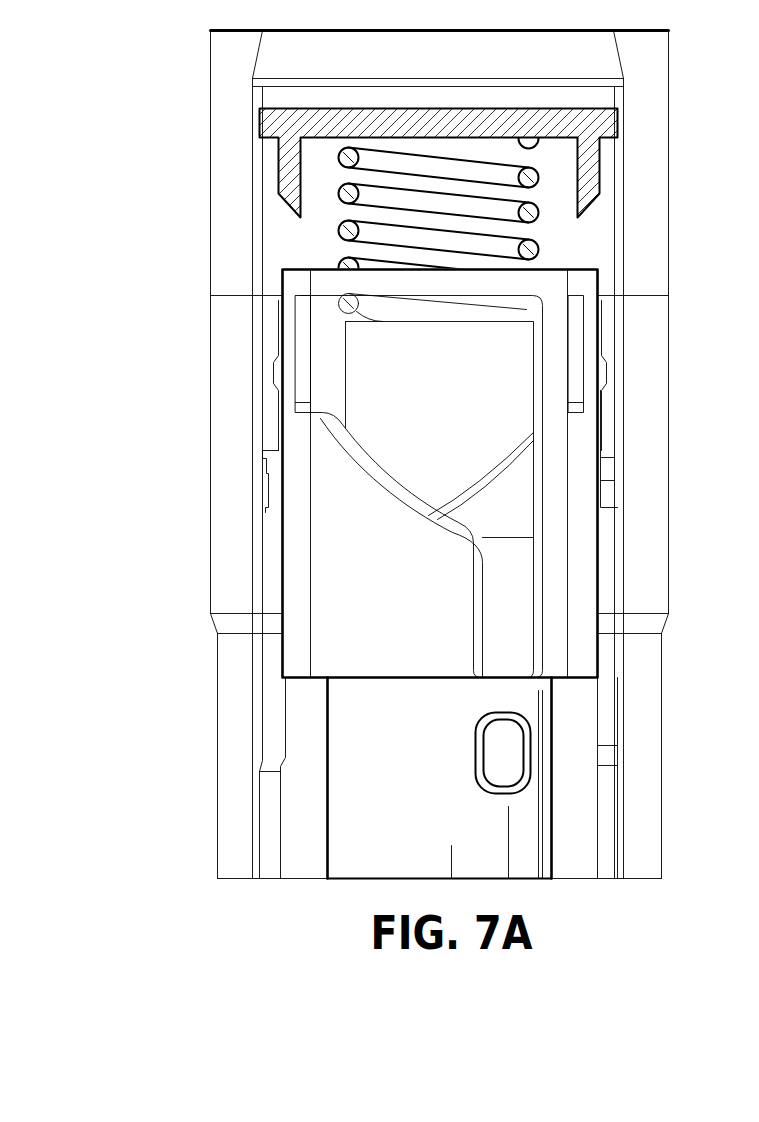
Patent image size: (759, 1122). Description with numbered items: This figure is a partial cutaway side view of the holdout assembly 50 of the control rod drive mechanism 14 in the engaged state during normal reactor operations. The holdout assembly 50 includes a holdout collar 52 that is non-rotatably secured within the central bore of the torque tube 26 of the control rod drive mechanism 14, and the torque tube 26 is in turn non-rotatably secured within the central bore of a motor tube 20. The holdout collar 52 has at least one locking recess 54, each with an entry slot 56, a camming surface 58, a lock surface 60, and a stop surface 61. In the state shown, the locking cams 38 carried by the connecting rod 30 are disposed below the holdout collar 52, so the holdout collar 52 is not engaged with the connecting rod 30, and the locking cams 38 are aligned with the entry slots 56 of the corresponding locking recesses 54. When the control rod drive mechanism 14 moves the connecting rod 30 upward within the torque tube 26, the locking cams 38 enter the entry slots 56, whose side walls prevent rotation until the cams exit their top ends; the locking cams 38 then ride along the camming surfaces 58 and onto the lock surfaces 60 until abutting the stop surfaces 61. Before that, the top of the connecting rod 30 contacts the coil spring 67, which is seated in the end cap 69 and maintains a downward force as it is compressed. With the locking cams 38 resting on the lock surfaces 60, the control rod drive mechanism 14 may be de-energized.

The control rod drive mechanism 14 is at (186, 137).
The motor tube 20 is at (638, 830).
The torque tube 26 is at (267, 806).
The connecting rod 30 is at (393, 840).
The locking cam 38 is at (522, 772).
The holdout assembly 50 is at (190, 490).
The holdout collar 52 is at (363, 693).
The locking recess 54 is at (476, 382).
The entry slot 56 is at (526, 696).
The camming surface 58 is at (385, 468).
The lock surface 60 is at (310, 410).
The stop surface 61 is at (310, 342).
The coil spring 67 is at (538, 212).
The end cap 69 is at (617, 124).